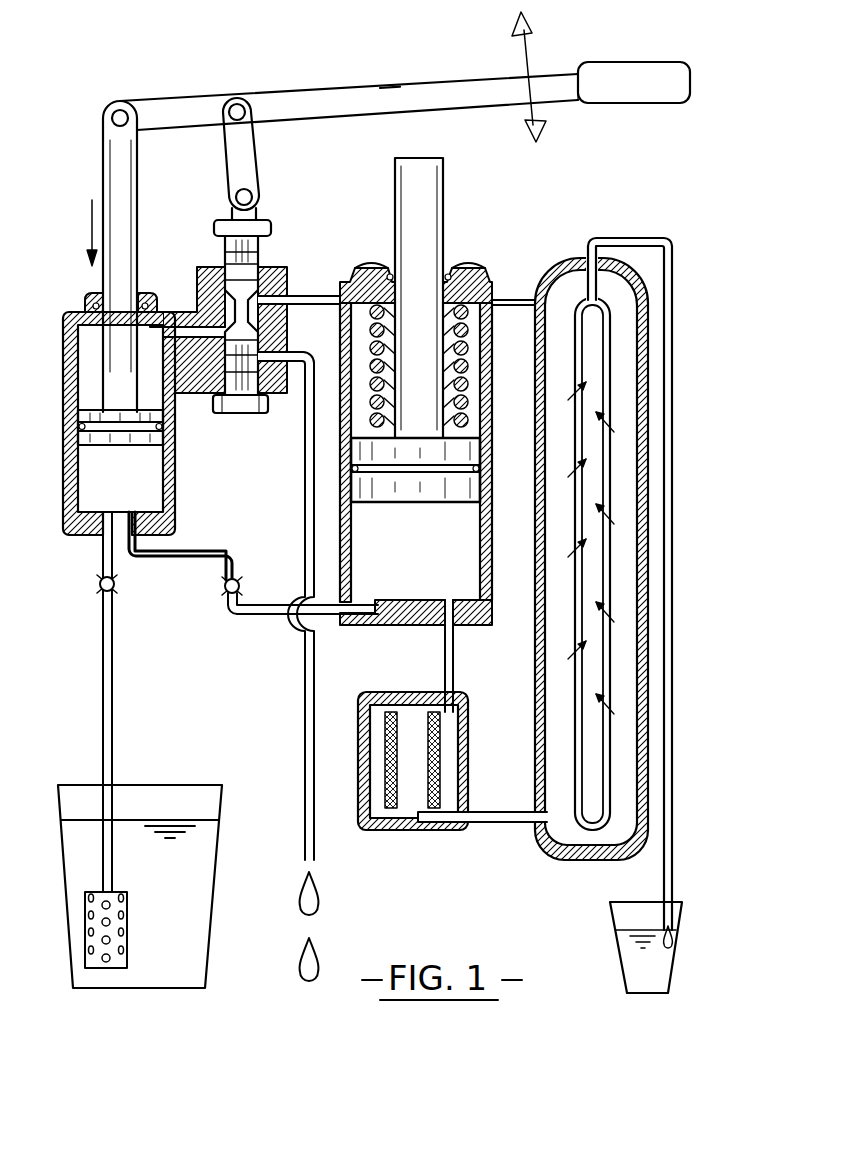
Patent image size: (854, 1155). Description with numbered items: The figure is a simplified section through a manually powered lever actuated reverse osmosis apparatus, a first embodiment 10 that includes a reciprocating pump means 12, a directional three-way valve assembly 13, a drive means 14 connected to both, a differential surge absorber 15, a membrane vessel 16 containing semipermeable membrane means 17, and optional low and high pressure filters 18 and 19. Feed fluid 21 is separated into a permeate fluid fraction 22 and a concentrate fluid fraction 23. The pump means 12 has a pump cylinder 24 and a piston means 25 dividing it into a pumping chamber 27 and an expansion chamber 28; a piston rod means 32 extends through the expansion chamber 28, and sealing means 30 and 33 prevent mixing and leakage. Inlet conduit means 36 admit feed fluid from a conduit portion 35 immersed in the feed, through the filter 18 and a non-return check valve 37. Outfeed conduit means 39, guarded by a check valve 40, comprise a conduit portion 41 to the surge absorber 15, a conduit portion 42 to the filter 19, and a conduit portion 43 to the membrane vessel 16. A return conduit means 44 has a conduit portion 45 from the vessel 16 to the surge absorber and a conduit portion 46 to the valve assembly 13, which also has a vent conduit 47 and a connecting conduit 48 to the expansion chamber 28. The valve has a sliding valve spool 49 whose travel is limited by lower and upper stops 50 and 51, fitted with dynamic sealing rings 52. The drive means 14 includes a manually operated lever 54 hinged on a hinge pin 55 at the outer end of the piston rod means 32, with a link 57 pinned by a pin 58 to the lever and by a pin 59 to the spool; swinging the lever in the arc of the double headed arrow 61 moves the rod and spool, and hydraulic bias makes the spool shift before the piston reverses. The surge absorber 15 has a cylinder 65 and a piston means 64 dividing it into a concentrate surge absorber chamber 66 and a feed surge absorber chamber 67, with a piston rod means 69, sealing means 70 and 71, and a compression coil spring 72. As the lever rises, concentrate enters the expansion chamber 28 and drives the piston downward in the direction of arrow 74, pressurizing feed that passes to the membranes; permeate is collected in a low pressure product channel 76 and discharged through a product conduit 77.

The first embodiment of lever actuated membrane separation apparatus 10 is at (371, 60).
The reciprocating pump means 12 is at (145, 300).
The directional three-way valve assembly 13 is at (266, 247).
The drive means 14 is at (435, 82).
The differential surge absorber 15 is at (456, 228).
The membrane vessel 16 is at (537, 752).
The semipermeable membrane means 17 is at (593, 564).
The low pressure filter 18 is at (128, 895).
The high pressure filter 19 is at (366, 692).
The feed fluid 21 is at (163, 825).
The permeate fluid fraction 22 is at (641, 930).
The concentrate fluid fraction 23 is at (322, 895).
The pump cylinder 24 is at (66, 395).
The piston means 25 is at (137, 445).
The pumping chamber 27 is at (95, 492).
The expansion chamber 28 is at (150, 398).
The sealing means 30 is at (163, 438).
The piston rod means 32 is at (104, 168).
The sealing means 33 is at (88, 300).
The conduit portion 35 is at (112, 662).
The inlet conduit means 36 is at (112, 560).
The non-return check valve 37 is at (115, 585).
The outfeed conduit means 39 is at (245, 579).
The non-return check valve 40 is at (226, 594).
The conduit portion 41 is at (258, 618).
The conduit portion 42 is at (445, 665).
The conduit portion 43 is at (488, 828).
The return conduit means 44 is at (366, 248).
The conduit portion 45 is at (517, 302).
The conduit portion 46 is at (318, 304).
The vent conduit 47 is at (305, 690).
The connecting conduit 48 is at (185, 335).
The sliding valve spool 49 is at (259, 250).
The lower stop 50 is at (240, 415).
The upper stop 51 is at (267, 228).
The dynamic sealing rings 52 is at (224, 268).
The manually operated lever 54 is at (385, 91).
The hinge pin 55 is at (118, 108).
The link 57 is at (225, 168).
The pin 58 is at (237, 103).
The pin 59 is at (251, 192).
The double headed arrow 61 is at (530, 47).
The piston means 64 is at (484, 494).
The cylinder 65 is at (492, 548).
The concentrate surge absorber chamber 66 is at (471, 278).
The feed surge absorber chamber 67 is at (489, 602).
The piston rod means 69 is at (445, 162).
The sealing means 70 is at (478, 470).
The sealing means 71 is at (450, 276).
The compression coil spring 72 is at (470, 372).
The arrow 74 is at (92, 200).
The low pressure product channel 76 is at (640, 345).
The product conduit 77 is at (622, 240).